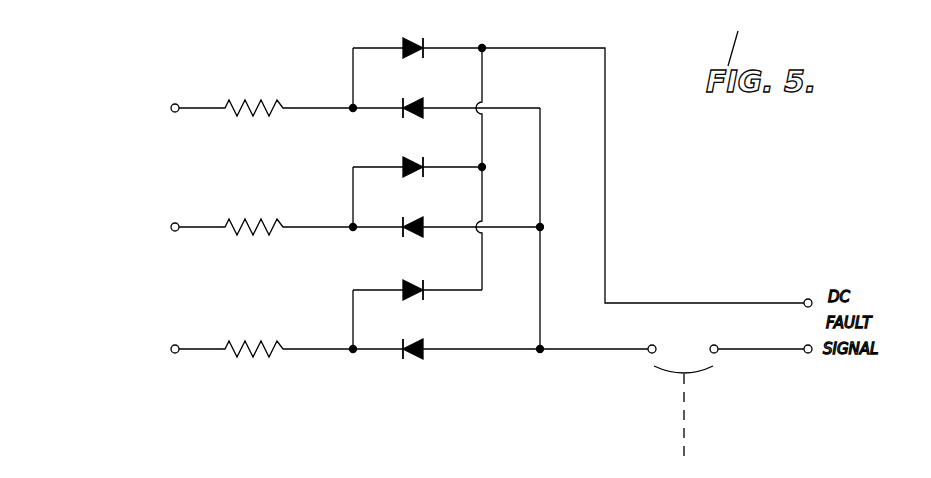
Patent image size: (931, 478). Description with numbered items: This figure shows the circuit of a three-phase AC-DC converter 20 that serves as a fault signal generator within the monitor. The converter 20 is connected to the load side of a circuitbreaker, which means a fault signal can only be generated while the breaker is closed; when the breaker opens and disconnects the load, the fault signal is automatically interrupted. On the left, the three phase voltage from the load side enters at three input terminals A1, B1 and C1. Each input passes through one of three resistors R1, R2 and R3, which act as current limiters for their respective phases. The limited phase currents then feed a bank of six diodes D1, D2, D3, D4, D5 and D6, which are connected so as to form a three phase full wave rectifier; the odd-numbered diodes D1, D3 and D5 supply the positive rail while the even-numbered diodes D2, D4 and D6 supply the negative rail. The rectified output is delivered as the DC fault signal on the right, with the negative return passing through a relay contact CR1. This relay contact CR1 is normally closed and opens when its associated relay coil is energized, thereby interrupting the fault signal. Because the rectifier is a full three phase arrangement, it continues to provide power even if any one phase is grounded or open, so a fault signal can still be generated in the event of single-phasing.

The three-phase AC-DC converter 20 is at (140, 270).
The phase A input terminal A1 is at (184, 95).
The phase B input terminal B1 is at (186, 213).
The phase C input terminal C1 is at (183, 335).
The resistor R1 is at (255, 93).
The resistor R2 is at (255, 212).
The resistor R3 is at (255, 335).
The diode D1 is at (417, 39).
The diode D2 is at (446, 100).
The diode D3 is at (417, 159).
The diode D4 is at (446, 219).
The diode D5 is at (417, 282).
The diode D6 is at (446, 341).
The relay contact CR1 is at (691, 402).